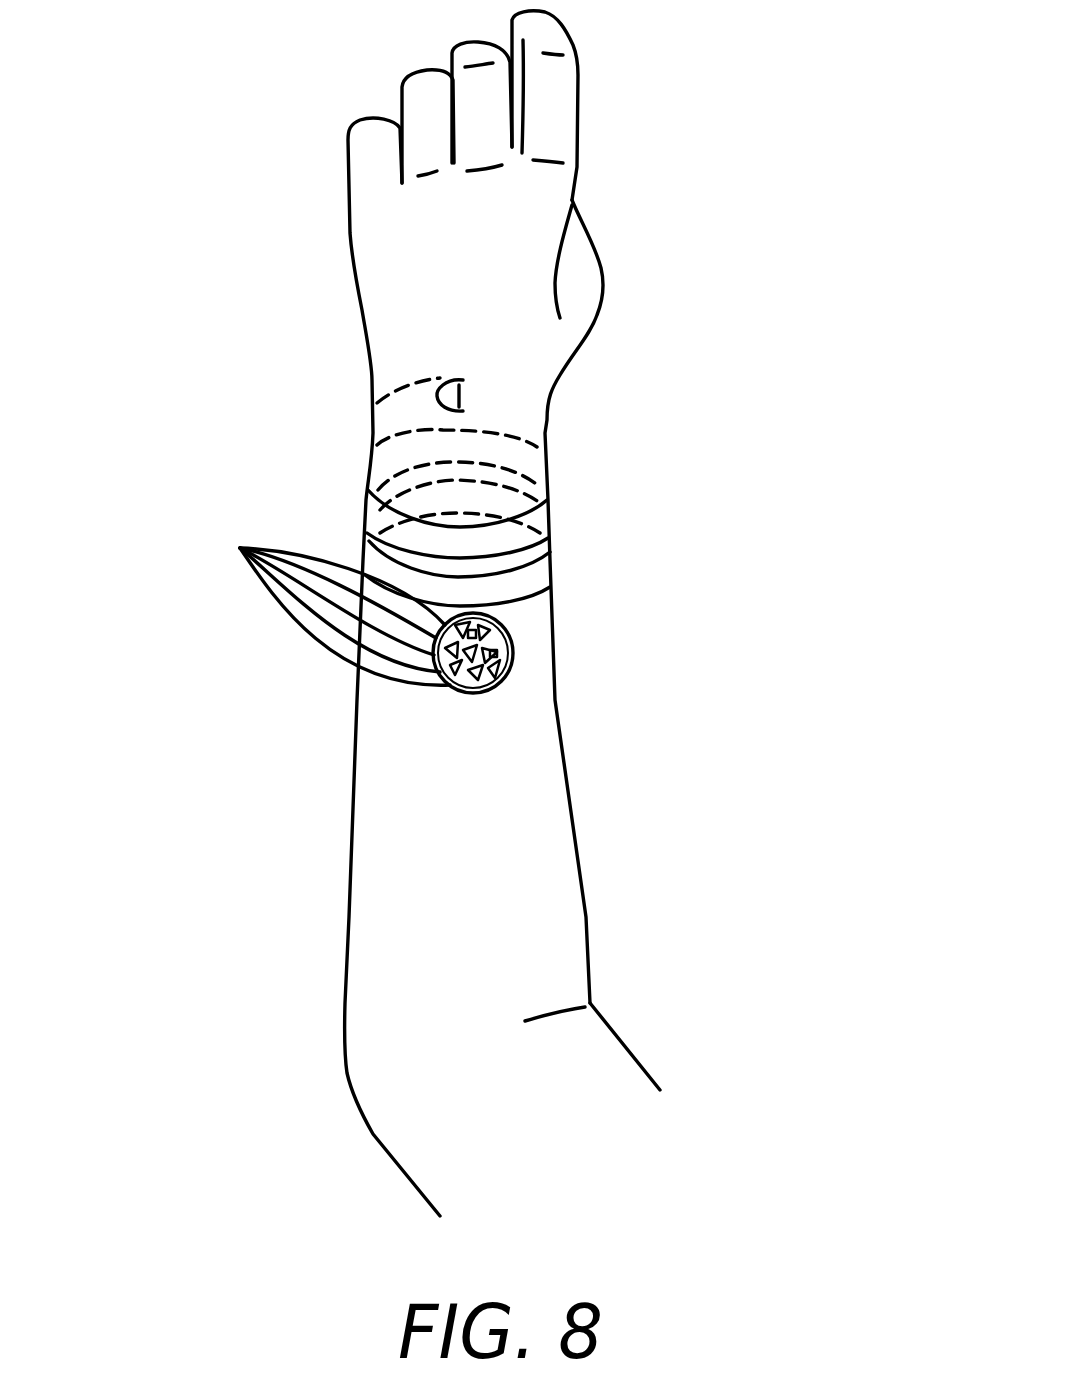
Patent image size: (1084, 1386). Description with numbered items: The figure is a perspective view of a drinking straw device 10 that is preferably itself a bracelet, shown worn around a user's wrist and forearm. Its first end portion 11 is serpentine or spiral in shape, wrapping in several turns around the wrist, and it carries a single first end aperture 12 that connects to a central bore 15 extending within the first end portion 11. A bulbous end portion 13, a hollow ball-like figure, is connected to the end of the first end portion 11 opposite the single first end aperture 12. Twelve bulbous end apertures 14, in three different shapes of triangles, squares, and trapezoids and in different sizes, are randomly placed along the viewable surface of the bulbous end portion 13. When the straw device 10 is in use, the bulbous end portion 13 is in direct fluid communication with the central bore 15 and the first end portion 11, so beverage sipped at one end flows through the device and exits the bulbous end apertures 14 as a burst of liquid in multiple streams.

The drinking straw device 10 is at (650, 500).
The first end portion 11 is at (550, 563).
The single first end aperture 12 is at (465, 393).
The bulbous end portion 13 is at (508, 677).
The bulbous end apertures 14 is at (240, 548).
The central bore 15 is at (365, 509).